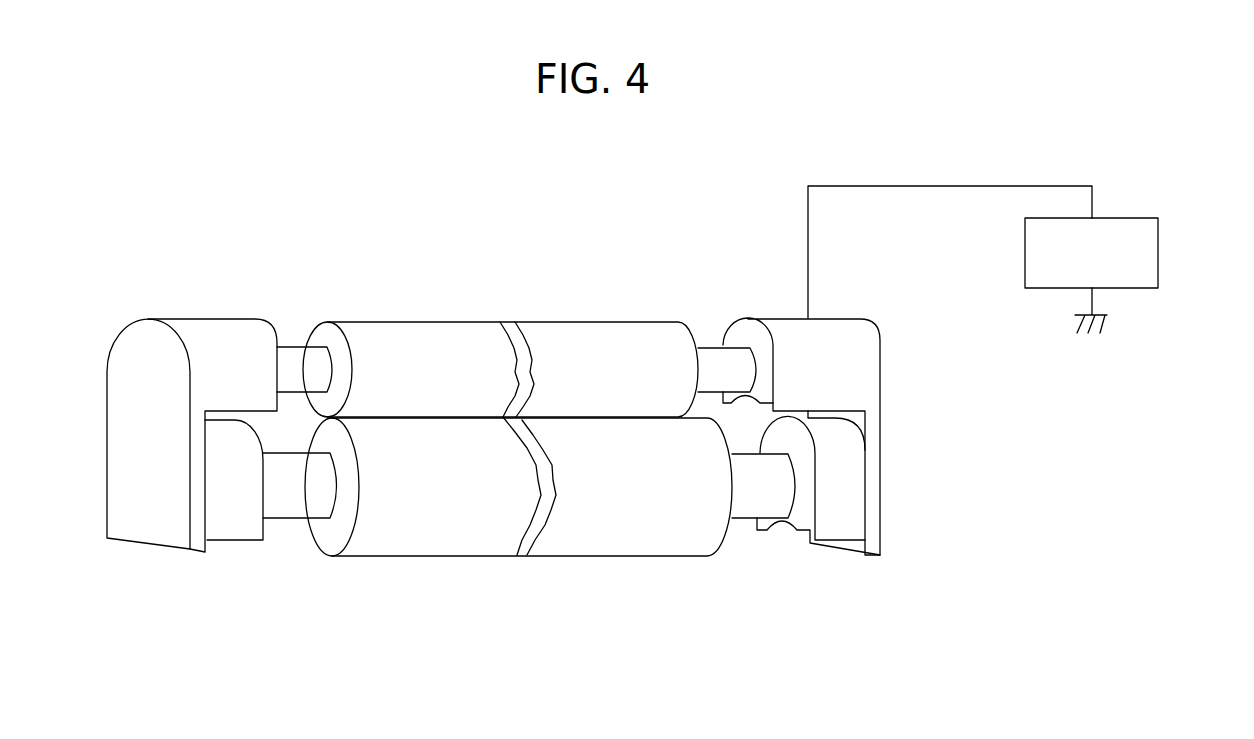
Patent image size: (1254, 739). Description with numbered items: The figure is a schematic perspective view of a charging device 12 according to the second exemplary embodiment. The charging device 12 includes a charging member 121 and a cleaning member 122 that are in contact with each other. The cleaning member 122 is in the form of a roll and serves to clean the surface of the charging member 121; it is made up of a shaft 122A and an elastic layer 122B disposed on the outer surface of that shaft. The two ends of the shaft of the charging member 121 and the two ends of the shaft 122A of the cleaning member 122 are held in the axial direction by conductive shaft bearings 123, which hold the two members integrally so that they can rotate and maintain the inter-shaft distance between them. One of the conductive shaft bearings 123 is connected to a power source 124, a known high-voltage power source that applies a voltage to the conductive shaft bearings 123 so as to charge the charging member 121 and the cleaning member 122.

The charging device 12 is at (645, 212).
The charging member 121 is at (432, 542).
The cleaning member 122 is at (508, 331).
The shaft 122A is at (290, 357).
The elastic layer 122B is at (367, 337).
The conductive shaft bearings 123 is at (184, 326).
The power source 124 is at (1158, 250).